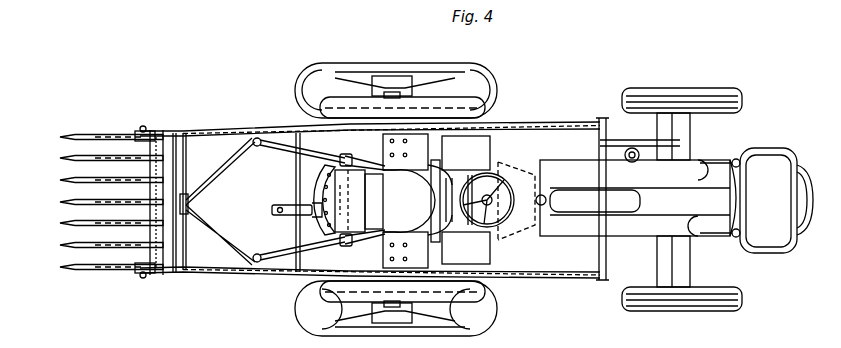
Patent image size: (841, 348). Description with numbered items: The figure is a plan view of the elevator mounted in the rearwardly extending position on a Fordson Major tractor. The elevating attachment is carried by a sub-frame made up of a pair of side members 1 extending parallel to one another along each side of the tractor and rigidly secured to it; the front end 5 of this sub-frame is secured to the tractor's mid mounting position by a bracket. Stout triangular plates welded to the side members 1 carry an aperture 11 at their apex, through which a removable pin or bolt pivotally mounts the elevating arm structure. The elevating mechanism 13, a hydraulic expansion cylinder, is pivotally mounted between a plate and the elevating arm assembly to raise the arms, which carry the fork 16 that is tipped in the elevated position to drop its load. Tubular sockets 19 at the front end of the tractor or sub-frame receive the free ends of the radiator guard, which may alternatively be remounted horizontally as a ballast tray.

The side members 1 is at (270, 129).
The front end 5 is at (402, 238).
The aperture 11 is at (776, 165).
The elevating mechanism 13 is at (222, 129).
The fork 16 is at (100, 136).
The tubular sockets 19 is at (737, 158).